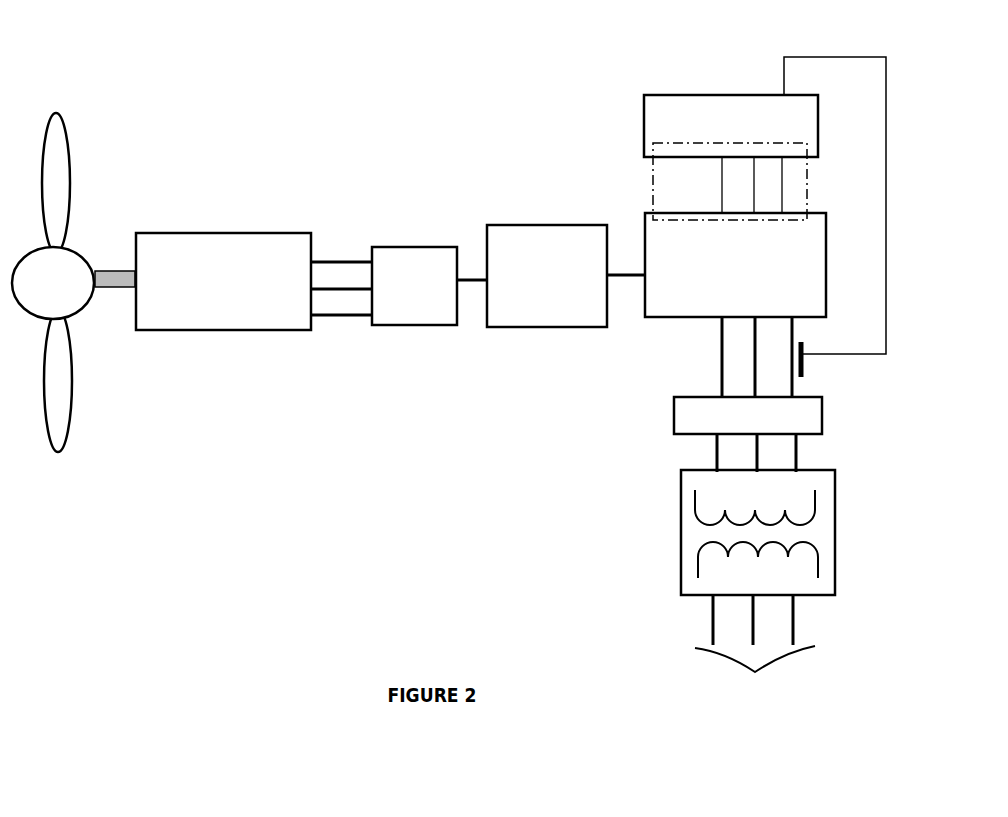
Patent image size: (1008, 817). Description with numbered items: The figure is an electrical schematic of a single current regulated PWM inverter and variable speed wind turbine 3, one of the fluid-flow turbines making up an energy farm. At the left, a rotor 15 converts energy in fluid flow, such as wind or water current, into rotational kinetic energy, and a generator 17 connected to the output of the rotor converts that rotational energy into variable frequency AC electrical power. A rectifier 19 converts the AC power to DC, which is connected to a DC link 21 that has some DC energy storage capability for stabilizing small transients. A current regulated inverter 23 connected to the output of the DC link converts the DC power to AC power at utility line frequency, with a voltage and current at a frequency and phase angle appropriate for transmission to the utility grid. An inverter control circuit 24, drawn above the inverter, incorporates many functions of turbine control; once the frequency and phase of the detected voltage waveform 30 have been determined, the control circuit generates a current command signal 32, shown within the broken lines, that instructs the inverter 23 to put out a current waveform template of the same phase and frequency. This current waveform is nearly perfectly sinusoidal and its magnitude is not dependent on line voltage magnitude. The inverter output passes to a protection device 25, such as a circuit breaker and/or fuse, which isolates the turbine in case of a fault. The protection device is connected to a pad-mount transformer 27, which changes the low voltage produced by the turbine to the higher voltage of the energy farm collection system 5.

The fluid-flow turbine 3 is at (388, 70).
The energy farm collection system 5 is at (755, 650).
The rotor 15 is at (80, 207).
The generator 17 is at (223, 281).
The rectifier 19 is at (414, 286).
The DC link 21 is at (547, 276).
The inverter 23 is at (735, 265).
The inverter control circuit 24 is at (731, 126).
The protection device 25 is at (748, 415).
The pad-mount transformer 27 is at (758, 532).
The detected voltage waveform 30 is at (853, 217).
The current command signal 32 is at (730, 181).